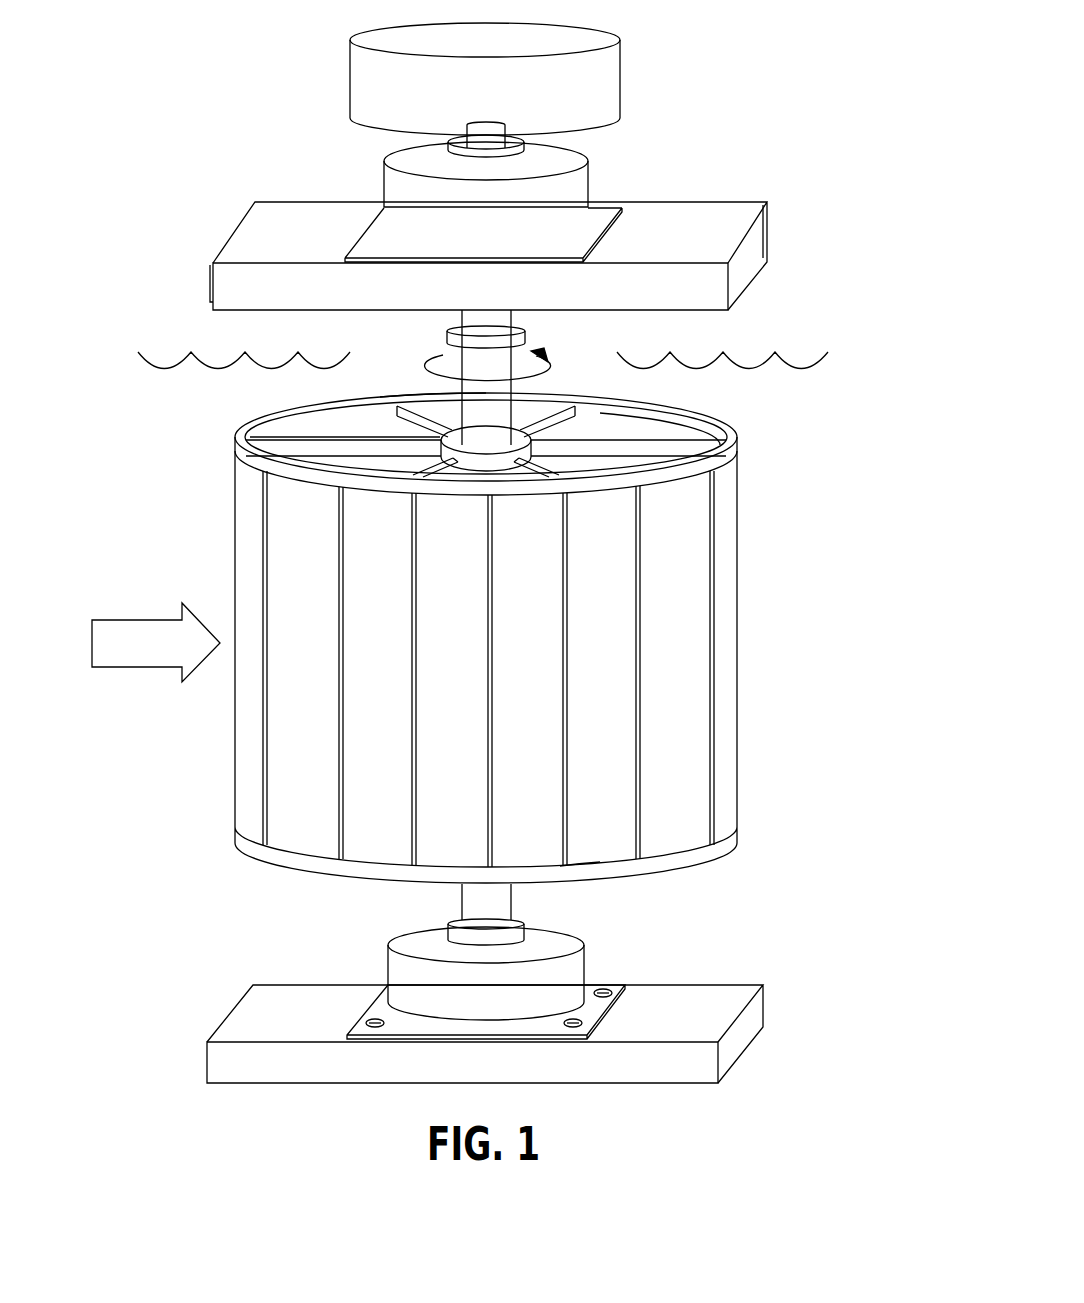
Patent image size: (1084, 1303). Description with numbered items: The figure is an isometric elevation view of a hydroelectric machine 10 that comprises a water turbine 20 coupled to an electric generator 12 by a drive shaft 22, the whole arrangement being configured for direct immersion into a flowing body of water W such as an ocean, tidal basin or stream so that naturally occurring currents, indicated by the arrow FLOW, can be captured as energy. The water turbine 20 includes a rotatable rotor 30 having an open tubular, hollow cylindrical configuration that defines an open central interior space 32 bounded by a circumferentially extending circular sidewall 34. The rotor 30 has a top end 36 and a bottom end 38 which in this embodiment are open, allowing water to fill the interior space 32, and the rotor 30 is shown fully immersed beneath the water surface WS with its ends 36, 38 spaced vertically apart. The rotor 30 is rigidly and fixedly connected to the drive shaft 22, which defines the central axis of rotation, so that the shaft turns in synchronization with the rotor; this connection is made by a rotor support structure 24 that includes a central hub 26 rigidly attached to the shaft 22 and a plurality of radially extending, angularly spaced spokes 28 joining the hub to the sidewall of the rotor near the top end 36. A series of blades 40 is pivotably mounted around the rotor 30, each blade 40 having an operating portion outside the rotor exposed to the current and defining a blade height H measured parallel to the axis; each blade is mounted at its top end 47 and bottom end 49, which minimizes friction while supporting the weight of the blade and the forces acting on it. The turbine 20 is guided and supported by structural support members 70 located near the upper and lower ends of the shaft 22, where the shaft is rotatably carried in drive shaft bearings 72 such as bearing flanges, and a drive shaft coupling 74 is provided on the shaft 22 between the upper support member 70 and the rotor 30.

The hydroelectric machine 10 is at (172, 86).
The electric generator 12 is at (620, 70).
The water turbine 20 is at (170, 410).
The drive shaft 22 is at (454, 314).
The rotor support structure 24 is at (694, 430).
The central hub 26 is at (521, 442).
The spokes 28 is at (660, 440).
The rotor 30 is at (744, 548).
The open central interior space 32 is at (288, 430).
The circular sidewall 34 is at (594, 420).
The top end 36 is at (351, 399).
The bottom end 38 is at (712, 856).
The blade 40 is at (672, 782).
The top end of the blade 47 is at (360, 490).
The bottom end of the blade 49 is at (580, 866).
The structural support member 70 is at (722, 203).
The drive shaft bearing 72 is at (590, 183).
The drive shaft coupling 74 is at (527, 333).
The water surface WS is at (777, 342).
The body of water W is at (813, 440).
The blade height H is at (365, 850).
The water current flow direction FLOW is at (156, 634).